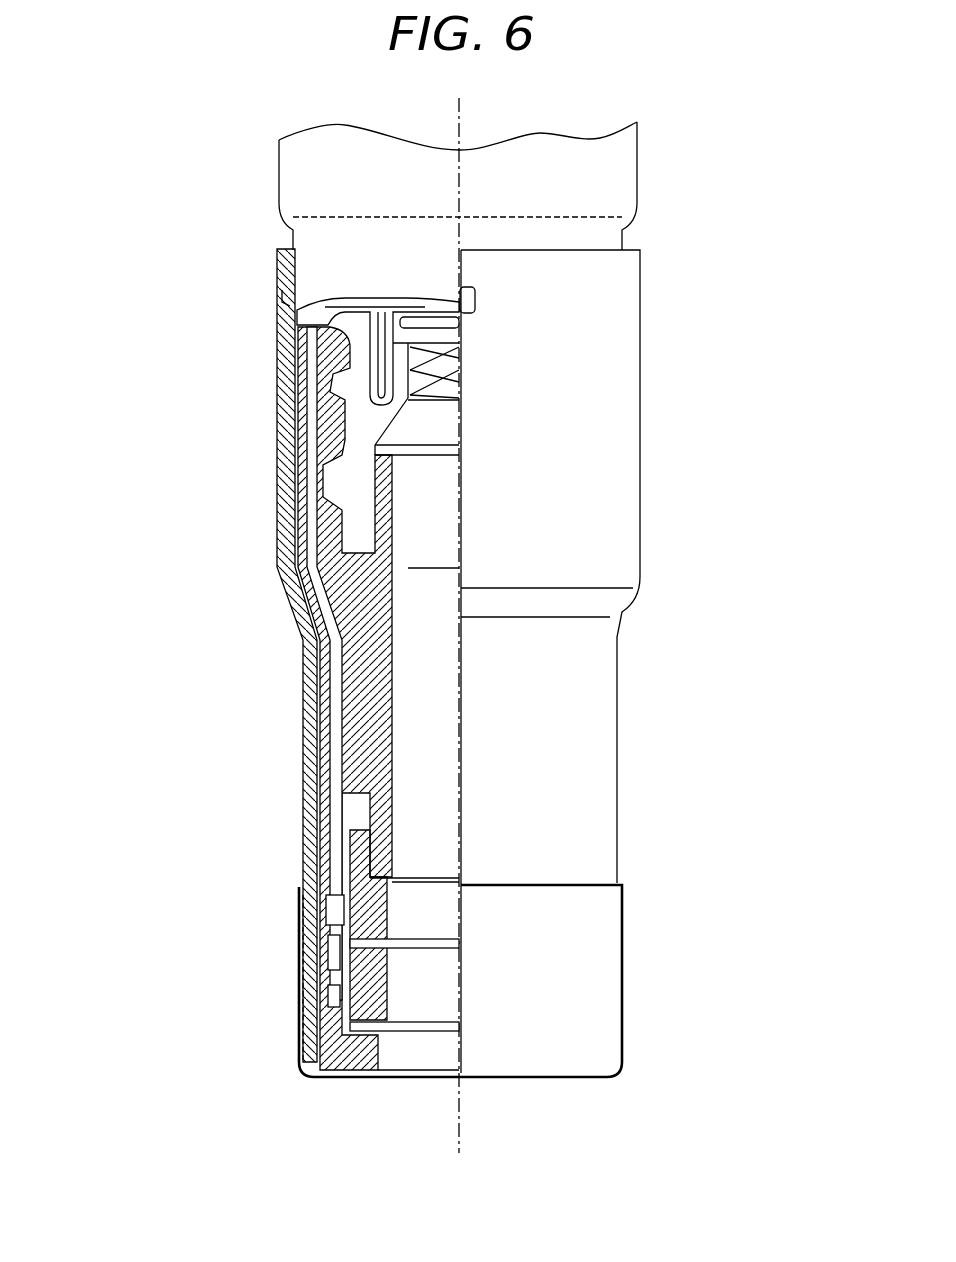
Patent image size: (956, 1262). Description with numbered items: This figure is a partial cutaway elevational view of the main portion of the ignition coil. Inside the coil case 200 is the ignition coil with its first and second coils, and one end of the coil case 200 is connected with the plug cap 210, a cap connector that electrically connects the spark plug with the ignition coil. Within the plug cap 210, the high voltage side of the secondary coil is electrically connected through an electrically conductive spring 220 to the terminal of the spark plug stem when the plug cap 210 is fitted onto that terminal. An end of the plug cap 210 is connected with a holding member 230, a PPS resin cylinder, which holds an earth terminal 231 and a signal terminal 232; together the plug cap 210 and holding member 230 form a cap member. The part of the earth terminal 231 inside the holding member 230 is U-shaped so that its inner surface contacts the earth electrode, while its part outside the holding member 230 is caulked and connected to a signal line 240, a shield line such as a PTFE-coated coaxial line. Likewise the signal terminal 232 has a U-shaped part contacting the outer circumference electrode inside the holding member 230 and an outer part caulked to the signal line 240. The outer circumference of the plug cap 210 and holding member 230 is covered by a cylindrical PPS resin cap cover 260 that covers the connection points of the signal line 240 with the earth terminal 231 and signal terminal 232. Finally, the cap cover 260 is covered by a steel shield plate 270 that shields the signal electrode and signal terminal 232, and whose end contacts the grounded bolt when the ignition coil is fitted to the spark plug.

The coil case 200 is at (296, 171).
The plug cap 210 is at (357, 563).
The spring 220 is at (461, 367).
The holding member 230 is at (365, 853).
The earth terminal 231 is at (461, 940).
The signal terminal 232 is at (461, 1025).
The signal line 240 is at (330, 726).
The cap cover 260 is at (290, 456).
The shield plate 270 is at (300, 1000).